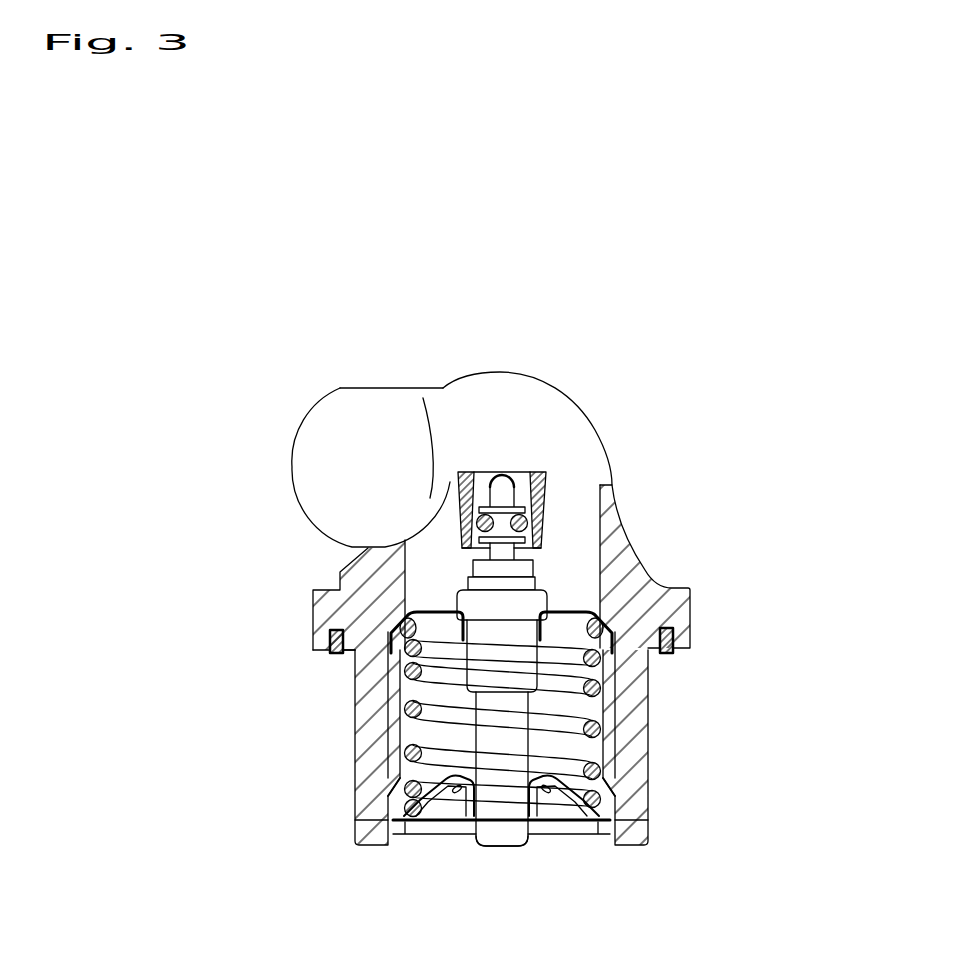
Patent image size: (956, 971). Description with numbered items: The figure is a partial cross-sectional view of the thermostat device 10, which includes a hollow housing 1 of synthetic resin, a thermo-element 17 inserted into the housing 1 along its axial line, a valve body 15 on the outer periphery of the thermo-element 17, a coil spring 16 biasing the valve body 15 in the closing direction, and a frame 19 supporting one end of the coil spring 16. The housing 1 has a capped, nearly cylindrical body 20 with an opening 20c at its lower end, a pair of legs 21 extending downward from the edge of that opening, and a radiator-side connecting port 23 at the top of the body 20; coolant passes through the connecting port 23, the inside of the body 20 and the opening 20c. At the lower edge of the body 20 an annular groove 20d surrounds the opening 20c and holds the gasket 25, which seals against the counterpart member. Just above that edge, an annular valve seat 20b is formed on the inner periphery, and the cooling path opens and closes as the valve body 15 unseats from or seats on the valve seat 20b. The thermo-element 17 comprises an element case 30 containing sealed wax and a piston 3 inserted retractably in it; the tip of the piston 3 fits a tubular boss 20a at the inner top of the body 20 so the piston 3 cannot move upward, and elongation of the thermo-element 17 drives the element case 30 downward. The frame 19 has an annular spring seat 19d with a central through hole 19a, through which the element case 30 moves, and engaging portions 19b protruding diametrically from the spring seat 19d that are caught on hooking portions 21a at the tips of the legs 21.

The housing 1 is at (414, 384).
The thermostat device 10 is at (191, 351).
The piston 3 is at (530, 556).
The valve body 15 is at (343, 636).
The coil spring 16 is at (640, 733).
The thermo-element 17 is at (505, 825).
The frame 19 is at (563, 825).
The through hole 19a is at (490, 812).
The engaging portion 19b is at (390, 797).
The spring seat 19d is at (548, 818).
The body 20 is at (590, 414).
The tubular boss 20a is at (528, 522).
The valve seat 20b is at (408, 618).
The opening 20c is at (640, 687).
The annular groove 20d is at (670, 652).
The leg 21 is at (352, 777).
The hooking portion 21a is at (388, 845).
The radiator-side connecting port 23 is at (318, 472).
The gasket 25 is at (337, 660).
The element case 30 is at (495, 733).